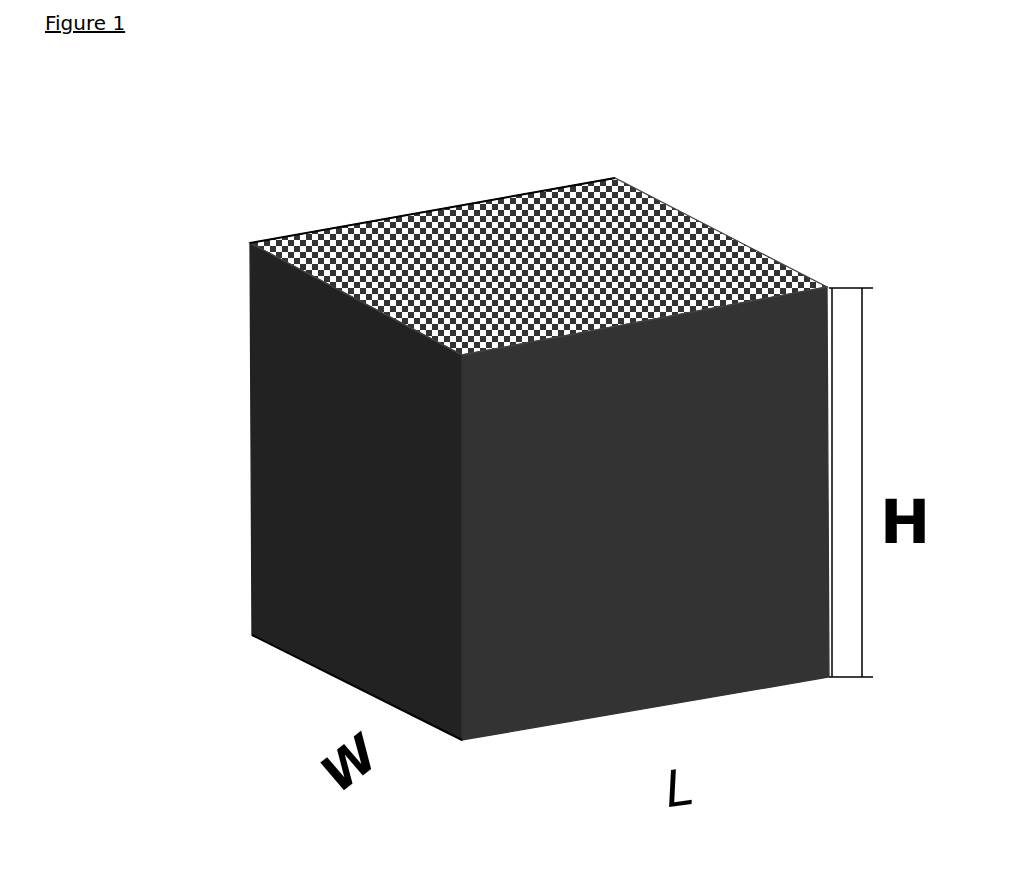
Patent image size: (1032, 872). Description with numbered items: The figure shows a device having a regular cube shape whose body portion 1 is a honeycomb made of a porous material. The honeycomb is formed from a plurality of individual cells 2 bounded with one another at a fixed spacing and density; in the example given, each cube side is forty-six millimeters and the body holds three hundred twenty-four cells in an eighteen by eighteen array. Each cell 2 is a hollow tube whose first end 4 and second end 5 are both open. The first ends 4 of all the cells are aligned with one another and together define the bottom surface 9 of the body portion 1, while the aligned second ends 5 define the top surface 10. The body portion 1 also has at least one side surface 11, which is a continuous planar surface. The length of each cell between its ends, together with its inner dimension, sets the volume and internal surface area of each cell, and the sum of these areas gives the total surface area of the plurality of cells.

The body portion 1 is at (435, 458).
The individual cells 2 is at (352, 253).
The first end 4 is at (252, 635).
The second end 5 is at (615, 178).
The bottom surface 9 is at (828, 683).
The top surface 10 is at (629, 170).
The side surface 11 is at (300, 397).